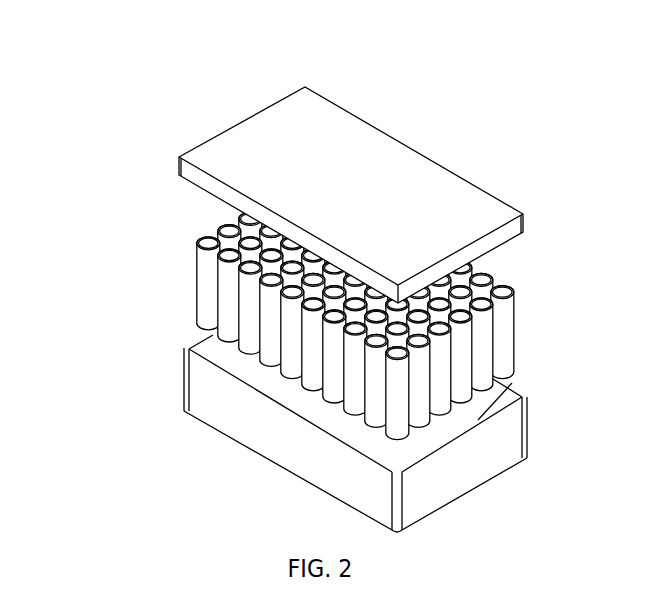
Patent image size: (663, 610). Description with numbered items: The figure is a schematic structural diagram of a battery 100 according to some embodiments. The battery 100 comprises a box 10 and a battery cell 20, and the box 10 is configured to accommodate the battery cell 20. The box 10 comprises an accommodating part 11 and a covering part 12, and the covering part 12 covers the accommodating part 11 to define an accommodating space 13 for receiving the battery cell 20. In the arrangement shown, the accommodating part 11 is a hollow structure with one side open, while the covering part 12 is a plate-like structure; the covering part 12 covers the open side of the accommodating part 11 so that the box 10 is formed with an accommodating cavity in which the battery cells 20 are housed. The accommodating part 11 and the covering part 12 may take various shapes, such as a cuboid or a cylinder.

The battery 100 is at (366, 54).
The box 10 is at (98, 228).
The accommodating part 11 is at (195, 400).
The covering part 12 is at (188, 179).
The accommodating space 13 is at (490, 410).
The battery cell 20 is at (507, 317).